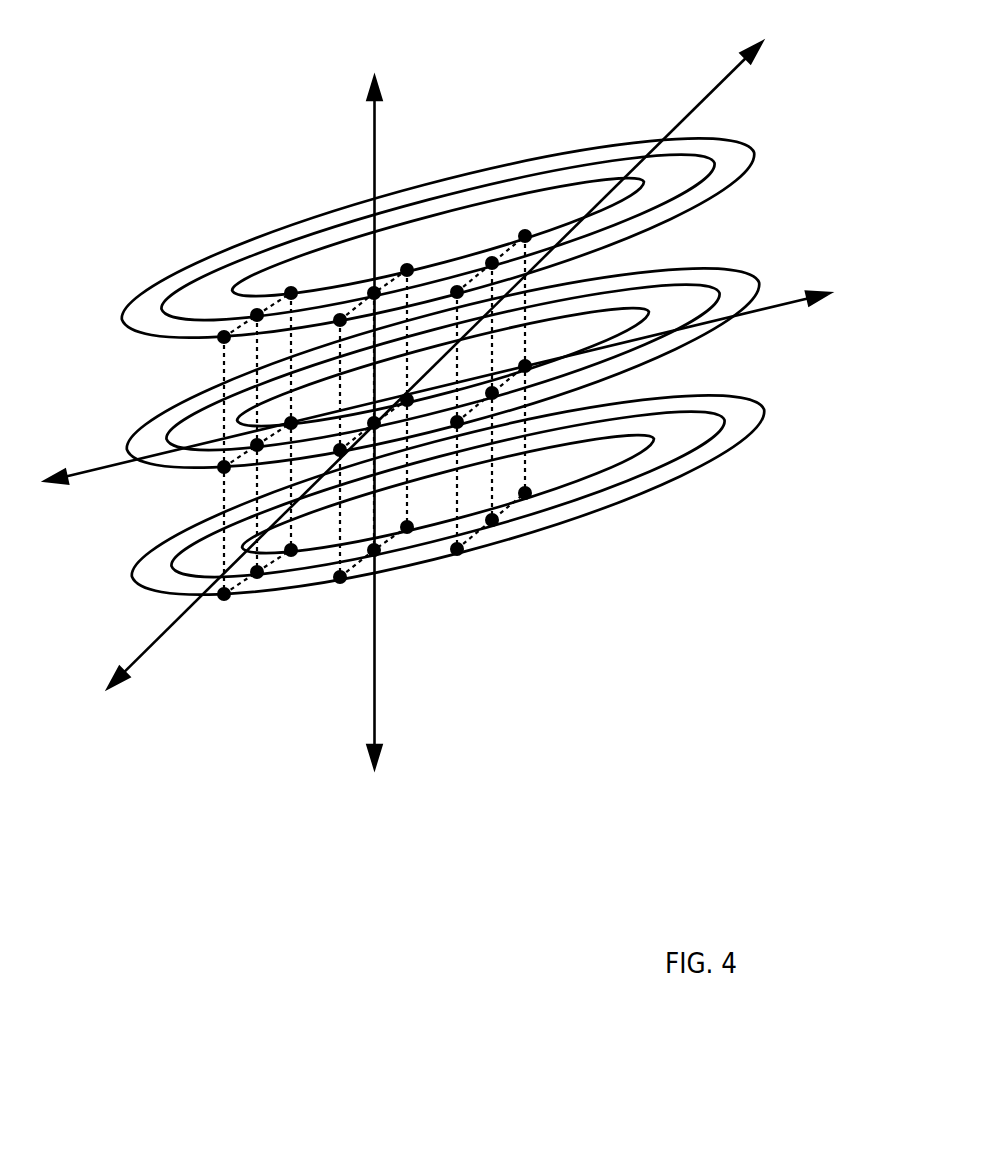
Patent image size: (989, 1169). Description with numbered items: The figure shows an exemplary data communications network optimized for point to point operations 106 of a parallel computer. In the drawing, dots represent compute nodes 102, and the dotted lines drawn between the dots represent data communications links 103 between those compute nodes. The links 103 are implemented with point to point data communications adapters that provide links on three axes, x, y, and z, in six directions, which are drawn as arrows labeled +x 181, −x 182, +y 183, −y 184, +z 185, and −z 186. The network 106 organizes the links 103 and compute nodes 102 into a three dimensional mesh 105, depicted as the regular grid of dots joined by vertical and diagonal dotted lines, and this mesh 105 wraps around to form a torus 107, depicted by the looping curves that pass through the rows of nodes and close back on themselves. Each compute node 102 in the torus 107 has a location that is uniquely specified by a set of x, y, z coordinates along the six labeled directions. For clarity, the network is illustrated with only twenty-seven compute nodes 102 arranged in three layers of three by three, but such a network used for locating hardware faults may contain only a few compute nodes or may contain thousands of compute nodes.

The compute nodes 102 is at (524, 498).
The data communications links 103 is at (223, 367).
The three dimensional mesh 105 is at (403, 446).
The data communications network optimized for point to point operations 106 is at (418, 575).
The torus 107 is at (200, 236).
The +x direction 181 is at (867, 325).
The −x direction 182 is at (40, 525).
The +y direction 183 is at (806, 65).
The −y direction 184 is at (103, 738).
The +z direction 185 is at (391, 68).
The −z direction 186 is at (391, 830).